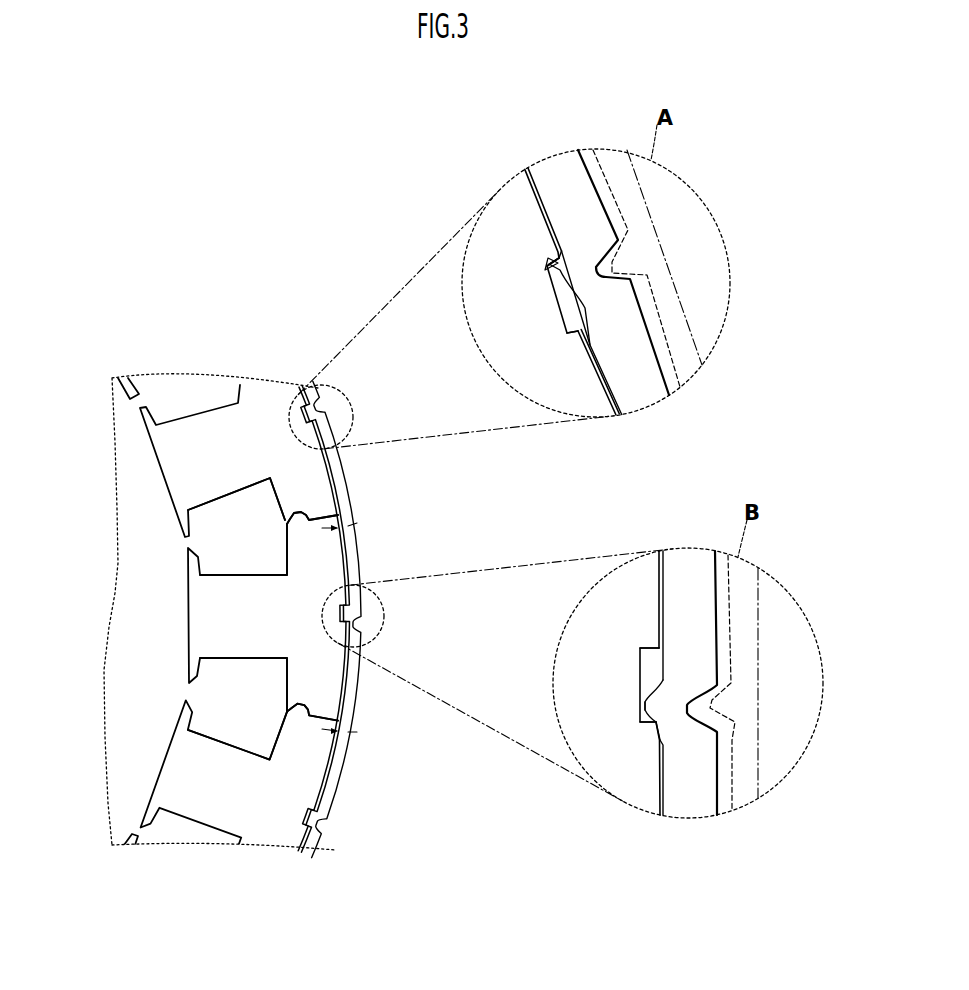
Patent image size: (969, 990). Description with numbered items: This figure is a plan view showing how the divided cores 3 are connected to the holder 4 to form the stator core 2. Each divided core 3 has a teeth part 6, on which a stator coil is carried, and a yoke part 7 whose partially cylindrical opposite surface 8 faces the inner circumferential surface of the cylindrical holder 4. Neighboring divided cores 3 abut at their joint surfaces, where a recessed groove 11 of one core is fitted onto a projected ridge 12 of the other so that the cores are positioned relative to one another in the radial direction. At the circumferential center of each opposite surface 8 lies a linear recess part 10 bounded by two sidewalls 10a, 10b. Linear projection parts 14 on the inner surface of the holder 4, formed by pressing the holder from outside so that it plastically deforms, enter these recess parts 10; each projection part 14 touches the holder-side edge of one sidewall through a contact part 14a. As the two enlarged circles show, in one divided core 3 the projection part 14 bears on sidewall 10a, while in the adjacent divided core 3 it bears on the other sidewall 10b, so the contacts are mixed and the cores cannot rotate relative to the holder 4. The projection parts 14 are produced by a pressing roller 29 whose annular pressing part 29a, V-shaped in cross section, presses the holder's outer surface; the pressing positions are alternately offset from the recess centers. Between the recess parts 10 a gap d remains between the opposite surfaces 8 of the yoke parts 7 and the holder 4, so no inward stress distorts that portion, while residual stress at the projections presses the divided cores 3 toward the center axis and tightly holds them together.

The stator core 2 is at (78, 448).
The divided core 3 is at (170, 735).
The holder 4 is at (688, 565).
The teeth part 6 is at (225, 740).
The yoke part 7 is at (313, 752).
The opposite surface 8 is at (348, 570).
The recess part 10 is at (482, 533).
The sidewall 10a is at (638, 648).
The sidewall 10b is at (641, 730).
The recessed groove 11 is at (308, 713).
The projected ridge 12 is at (305, 702).
The projection part 14 is at (507, 499).
The contact part 14a is at (670, 730).
The pressing roller 29 is at (703, 507).
The annular pressing part 29a is at (775, 792).
The gap d is at (346, 629).